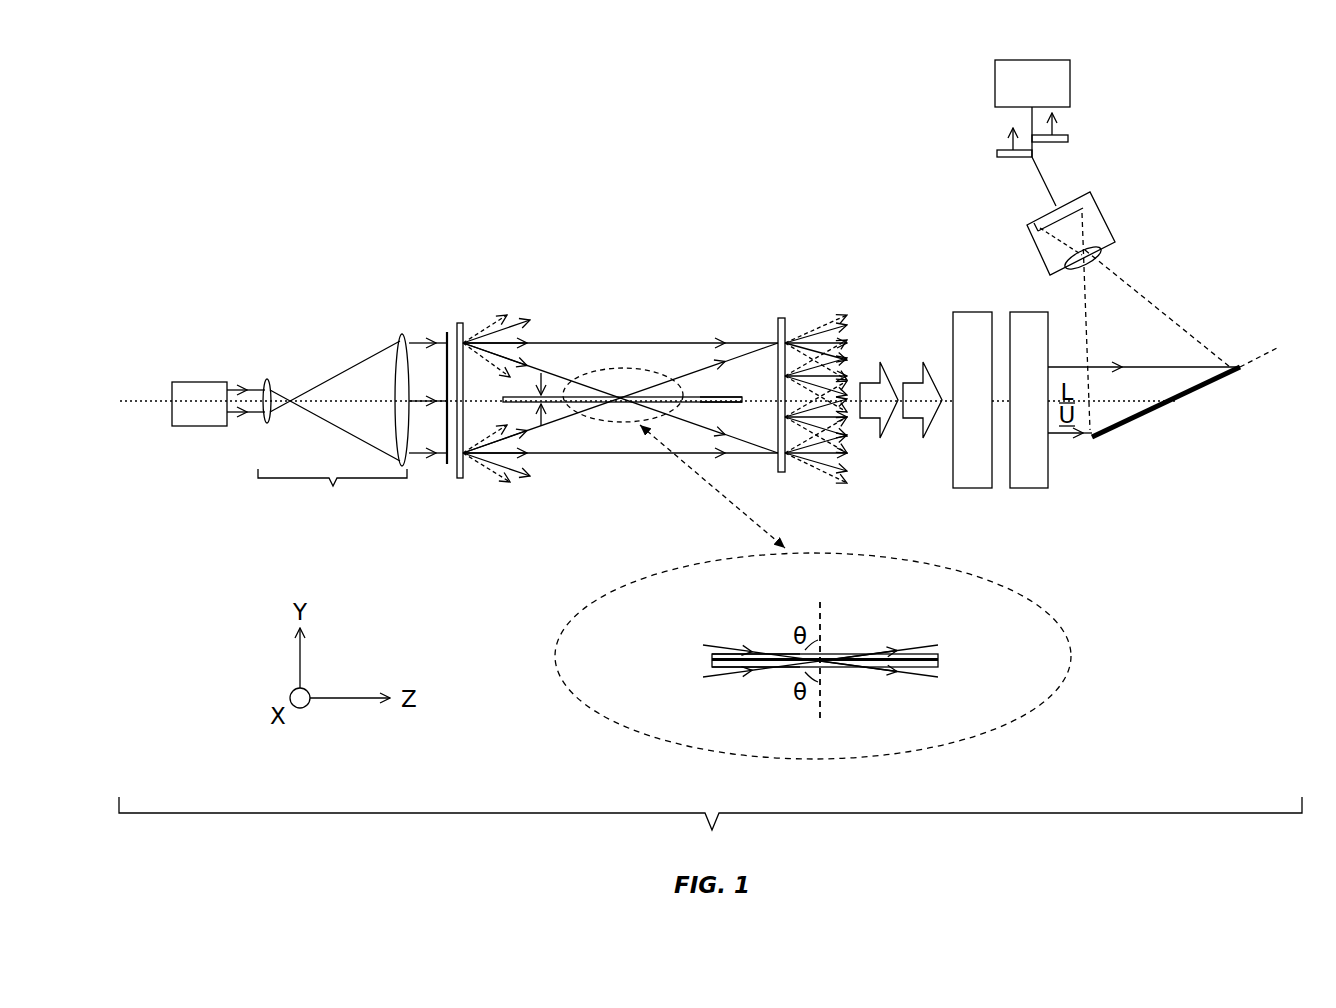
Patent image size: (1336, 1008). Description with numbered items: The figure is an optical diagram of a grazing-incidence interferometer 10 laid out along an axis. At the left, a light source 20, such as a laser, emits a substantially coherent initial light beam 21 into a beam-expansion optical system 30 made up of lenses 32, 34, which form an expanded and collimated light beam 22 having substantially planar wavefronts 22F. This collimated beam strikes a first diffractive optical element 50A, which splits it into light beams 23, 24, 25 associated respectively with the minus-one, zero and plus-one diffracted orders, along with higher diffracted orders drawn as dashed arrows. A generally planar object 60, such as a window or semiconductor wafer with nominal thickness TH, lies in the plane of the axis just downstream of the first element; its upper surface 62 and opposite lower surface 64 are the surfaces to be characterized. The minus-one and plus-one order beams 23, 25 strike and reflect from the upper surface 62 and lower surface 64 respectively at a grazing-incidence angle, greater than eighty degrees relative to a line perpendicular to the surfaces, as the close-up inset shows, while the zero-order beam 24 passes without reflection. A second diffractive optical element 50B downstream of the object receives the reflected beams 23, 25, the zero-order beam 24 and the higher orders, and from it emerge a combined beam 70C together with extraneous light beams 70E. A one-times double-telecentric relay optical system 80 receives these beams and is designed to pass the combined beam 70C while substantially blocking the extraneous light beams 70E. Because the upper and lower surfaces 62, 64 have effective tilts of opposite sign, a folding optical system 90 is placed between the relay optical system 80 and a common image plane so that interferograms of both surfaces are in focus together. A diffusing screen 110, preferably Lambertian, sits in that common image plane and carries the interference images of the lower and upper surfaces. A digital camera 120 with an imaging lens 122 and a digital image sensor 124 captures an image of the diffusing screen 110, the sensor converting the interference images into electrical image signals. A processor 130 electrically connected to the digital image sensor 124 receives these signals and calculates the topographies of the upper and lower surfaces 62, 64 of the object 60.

The grazing-incidence interferometer 10 is at (293, 157).
The light source 20 is at (190, 380).
The initial light beam 21 is at (245, 416).
The collimated light beam 22 is at (443, 465).
The planar wavefronts 22F is at (446, 340).
The −1 diffracted-order light beam 23 is at (529, 322).
The zero diffracted-order light beam 24 is at (527, 345).
The +1 diffracted-order light beam 25 is at (527, 367).
The beam-expansion optical system 30 is at (332, 427).
The lens 32 is at (267, 383).
The lens 34 is at (400, 342).
The first diffractive optical element 50A is at (458, 324).
The second diffractive optical element 50B is at (781, 318).
The object 60 is at (622, 390).
The upper surface 62 is at (716, 397).
The lower surface 64 is at (716, 403).
The extraneous light beams 70E is at (878, 362).
The combined beam 70C is at (920, 438).
The relay optical system 80 is at (959, 412).
The folding optical system 90 is at (1016, 412).
The diffusing screen 110 is at (1162, 405).
The digital camera 120 is at (1040, 258).
The imaging lens 122 is at (1103, 262).
The digital image sensor 124 is at (1036, 218).
The processor 130 is at (1014, 96).